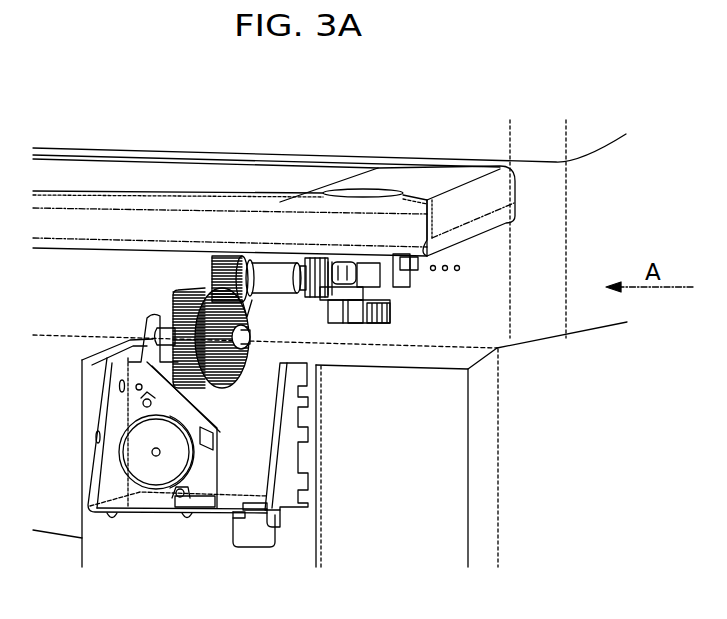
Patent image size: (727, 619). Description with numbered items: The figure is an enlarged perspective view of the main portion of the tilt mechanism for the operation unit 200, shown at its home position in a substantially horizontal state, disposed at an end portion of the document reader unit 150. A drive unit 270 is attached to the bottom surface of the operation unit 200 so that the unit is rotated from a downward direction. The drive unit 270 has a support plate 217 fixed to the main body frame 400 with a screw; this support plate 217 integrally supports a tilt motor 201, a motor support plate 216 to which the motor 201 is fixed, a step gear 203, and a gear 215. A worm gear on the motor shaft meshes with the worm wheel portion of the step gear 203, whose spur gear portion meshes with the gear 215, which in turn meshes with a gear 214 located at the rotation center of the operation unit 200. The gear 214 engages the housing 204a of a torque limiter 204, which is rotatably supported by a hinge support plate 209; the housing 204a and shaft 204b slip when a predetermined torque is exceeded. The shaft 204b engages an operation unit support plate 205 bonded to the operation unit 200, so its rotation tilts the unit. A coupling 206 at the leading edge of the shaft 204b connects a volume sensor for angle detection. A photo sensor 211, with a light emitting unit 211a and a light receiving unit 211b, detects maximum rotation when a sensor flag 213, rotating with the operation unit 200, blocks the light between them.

The operation unit 200 is at (138, 171).
The torque limiter 204 is at (319, 187).
The housing 204a is at (274, 262).
The shaft 204b is at (300, 260).
The hinge support plate 209 is at (336, 259).
The coupling 206 is at (350, 268).
The sensor flag 213 is at (348, 286).
The photo sensor 211 is at (383, 356).
The light emitting unit 211a is at (333, 325).
The light receiving unit 211b is at (355, 324).
The operation unit support plate 205 is at (306, 299).
The gear 214 is at (202, 277).
The gear 215 is at (173, 304).
The step gear 203 is at (147, 383).
The drive unit 270 is at (92, 418).
The tilt motor 201 is at (123, 457).
The support plate 217 is at (293, 477).
The motor support plate 216 is at (200, 493).
The main body frame 400 is at (155, 530).
The document reader unit 150 is at (478, 322).